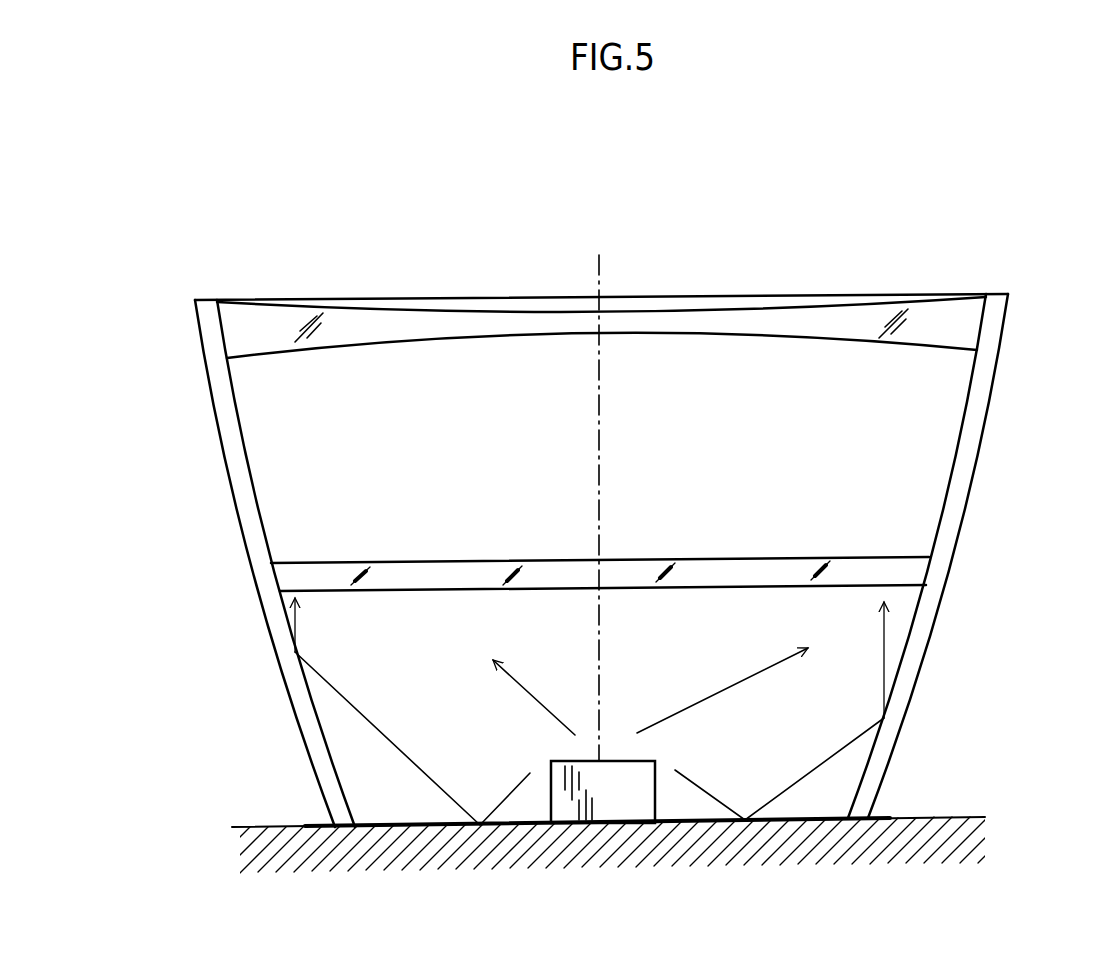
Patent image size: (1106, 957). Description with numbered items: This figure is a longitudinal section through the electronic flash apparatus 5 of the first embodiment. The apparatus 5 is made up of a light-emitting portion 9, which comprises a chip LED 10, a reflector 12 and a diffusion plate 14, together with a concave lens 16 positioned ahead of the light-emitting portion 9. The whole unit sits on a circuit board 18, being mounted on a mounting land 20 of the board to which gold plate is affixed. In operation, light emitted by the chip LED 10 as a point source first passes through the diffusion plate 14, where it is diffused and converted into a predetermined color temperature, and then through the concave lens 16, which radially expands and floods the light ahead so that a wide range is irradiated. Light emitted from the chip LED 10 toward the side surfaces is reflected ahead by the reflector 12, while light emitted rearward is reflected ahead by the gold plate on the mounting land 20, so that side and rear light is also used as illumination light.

The electronic flash apparatus 5 is at (285, 237).
The light-emitting portion 9 is at (1005, 573).
The chip LED 10 is at (553, 785).
The reflector 12 is at (918, 660).
The diffusion plate 14 is at (760, 576).
The concave lens 16 is at (825, 325).
The circuit board 18 is at (265, 826).
The mounting land 20 is at (430, 826).